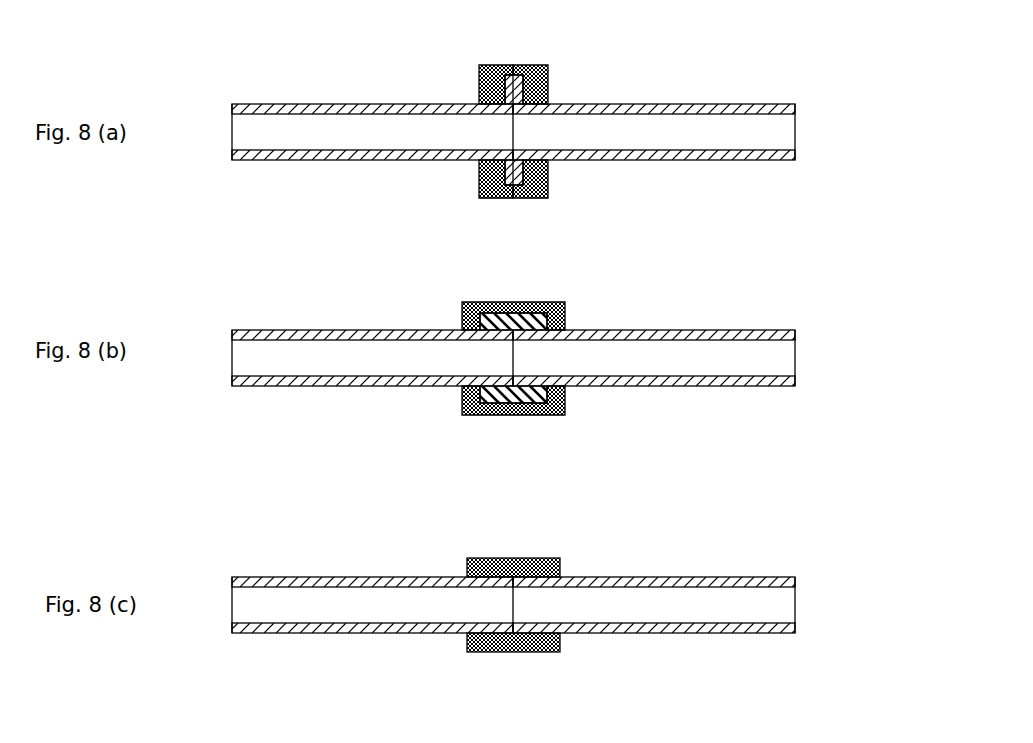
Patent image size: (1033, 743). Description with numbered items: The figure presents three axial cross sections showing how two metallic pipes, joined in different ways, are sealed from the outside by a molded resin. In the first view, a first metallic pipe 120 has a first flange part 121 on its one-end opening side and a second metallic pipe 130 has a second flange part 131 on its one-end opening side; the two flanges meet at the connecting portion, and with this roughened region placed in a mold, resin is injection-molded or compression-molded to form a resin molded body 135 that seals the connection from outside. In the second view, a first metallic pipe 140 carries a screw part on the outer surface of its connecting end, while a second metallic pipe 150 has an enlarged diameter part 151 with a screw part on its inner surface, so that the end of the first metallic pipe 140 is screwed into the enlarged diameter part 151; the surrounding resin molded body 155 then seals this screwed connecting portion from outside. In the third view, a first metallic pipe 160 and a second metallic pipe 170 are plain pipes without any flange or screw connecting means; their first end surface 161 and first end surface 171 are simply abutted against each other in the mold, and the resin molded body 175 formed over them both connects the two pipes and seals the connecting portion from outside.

The first metallic pipe 120 is at (335, 104).
The second metallic pipe 130 is at (688, 104).
The first flange part 121 is at (479, 72).
The second flange part 131 is at (548, 70).
The resin molded body 135 is at (514, 77).
The first metallic pipe 140 is at (372, 330).
The second metallic pipe 150 is at (710, 330).
The enlarged diameter part 151 is at (528, 302).
The resin molded body 155 is at (473, 302).
The first metallic pipe 160 is at (348, 577).
The second metallic pipe 170 is at (710, 577).
The resin molded body 175 is at (483, 577).
The first end surface 171 is at (507, 580).
The first end surface 161 is at (525, 632).